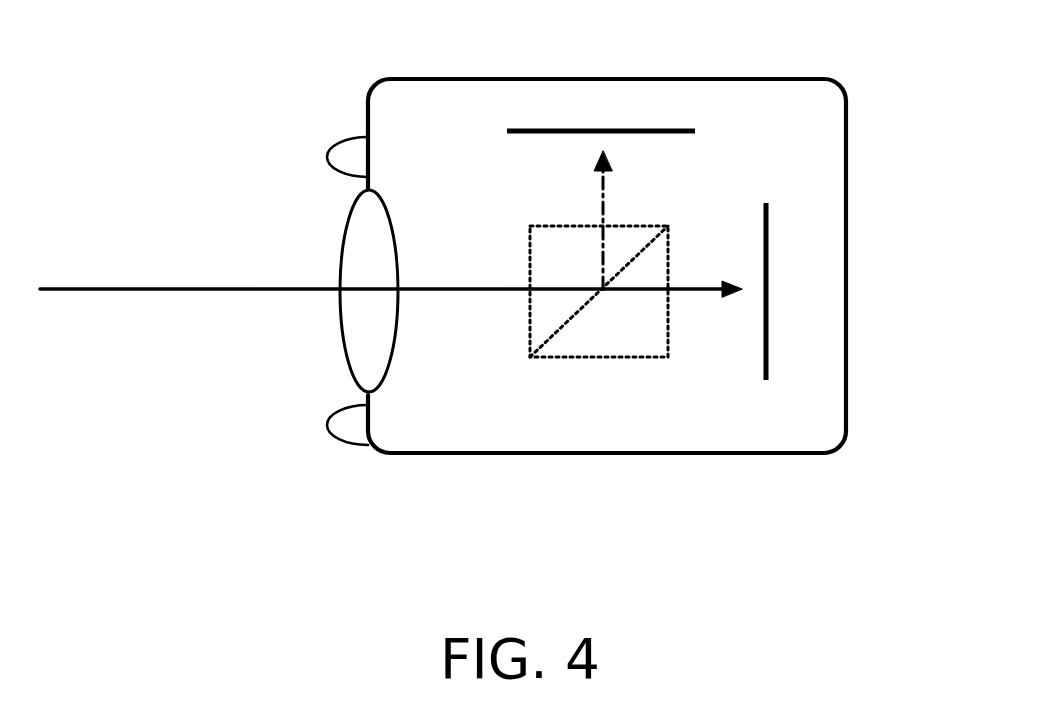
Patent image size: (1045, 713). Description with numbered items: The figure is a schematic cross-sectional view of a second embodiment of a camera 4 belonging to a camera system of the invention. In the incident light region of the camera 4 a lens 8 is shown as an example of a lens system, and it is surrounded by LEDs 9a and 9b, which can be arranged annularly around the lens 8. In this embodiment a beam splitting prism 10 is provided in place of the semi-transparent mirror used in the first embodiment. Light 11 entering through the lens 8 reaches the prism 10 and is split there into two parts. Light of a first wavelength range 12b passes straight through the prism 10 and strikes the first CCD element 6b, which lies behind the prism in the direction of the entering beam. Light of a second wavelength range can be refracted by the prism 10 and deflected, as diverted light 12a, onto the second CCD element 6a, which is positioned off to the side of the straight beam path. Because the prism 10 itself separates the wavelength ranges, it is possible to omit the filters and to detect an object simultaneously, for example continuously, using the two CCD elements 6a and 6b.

The camera 4 is at (846, 146).
The second CCD element 6a is at (602, 128).
The first CCD element 6b is at (768, 288).
The lens 8 is at (341, 243).
The LED 9a is at (327, 152).
The LED 9b is at (327, 427).
The beam splitting prism 10 is at (583, 357).
The light 11 is at (150, 288).
The diverted light 12a is at (602, 217).
The light of a first wavelength range 12b is at (693, 291).